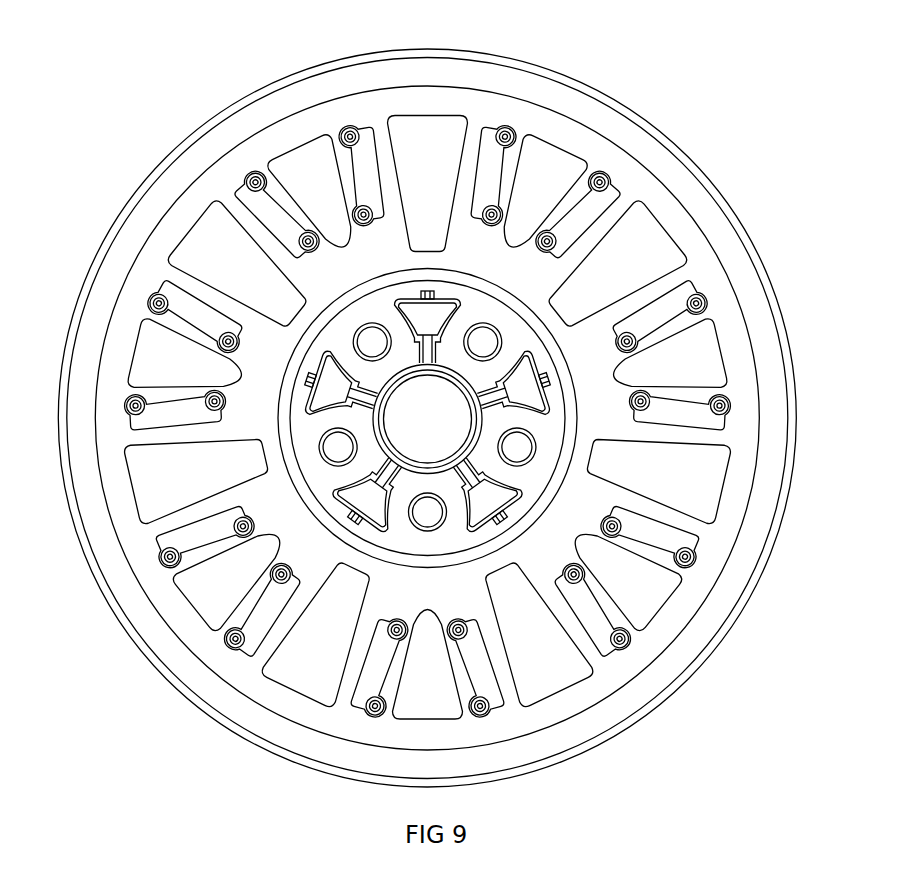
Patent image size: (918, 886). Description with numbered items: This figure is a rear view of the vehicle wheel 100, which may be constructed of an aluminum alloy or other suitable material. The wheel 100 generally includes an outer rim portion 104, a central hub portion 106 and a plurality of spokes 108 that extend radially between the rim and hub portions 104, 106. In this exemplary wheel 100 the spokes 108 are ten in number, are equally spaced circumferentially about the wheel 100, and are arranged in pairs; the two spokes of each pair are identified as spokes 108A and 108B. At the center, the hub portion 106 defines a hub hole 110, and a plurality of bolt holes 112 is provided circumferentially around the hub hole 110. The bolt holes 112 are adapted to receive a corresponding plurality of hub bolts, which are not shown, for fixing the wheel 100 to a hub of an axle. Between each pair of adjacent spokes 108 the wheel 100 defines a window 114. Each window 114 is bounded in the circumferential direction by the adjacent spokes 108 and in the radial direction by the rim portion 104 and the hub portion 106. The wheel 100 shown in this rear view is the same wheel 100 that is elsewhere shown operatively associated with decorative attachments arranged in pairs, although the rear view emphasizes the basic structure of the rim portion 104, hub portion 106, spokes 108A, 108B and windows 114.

The vehicle wheel 100 is at (437, 410).
The rim portion 104 is at (421, 418).
The hub portion 106 is at (670, 615).
The spokes 108 is at (525, 154).
The spoke of a pair of spokes 108A is at (304, 681).
The spoke of a pair of spokes 108B is at (550, 681).
The hub hole 110 is at (293, 563).
The bolt holes 112 is at (441, 190).
The window 114 is at (388, 396).